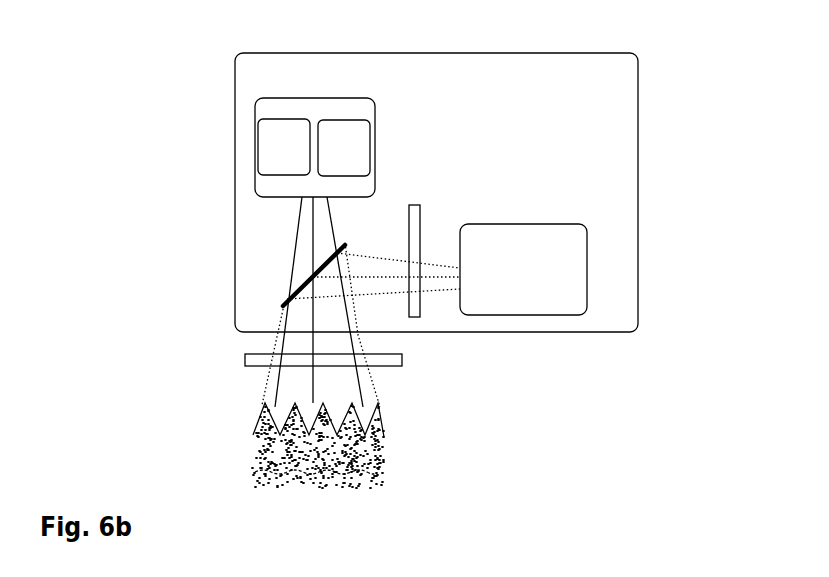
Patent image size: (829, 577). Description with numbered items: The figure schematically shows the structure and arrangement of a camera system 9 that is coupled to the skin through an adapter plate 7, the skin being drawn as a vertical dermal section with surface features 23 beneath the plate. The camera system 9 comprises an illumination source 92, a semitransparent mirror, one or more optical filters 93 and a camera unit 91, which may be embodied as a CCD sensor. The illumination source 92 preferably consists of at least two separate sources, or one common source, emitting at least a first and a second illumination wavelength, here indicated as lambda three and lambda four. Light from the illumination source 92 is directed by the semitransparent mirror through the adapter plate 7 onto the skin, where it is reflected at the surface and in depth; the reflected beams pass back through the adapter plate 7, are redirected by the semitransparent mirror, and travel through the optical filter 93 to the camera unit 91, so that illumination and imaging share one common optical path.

The camera system 9 is at (642, 116).
The illumination source 92 is at (308, 111).
The camera unit 91 is at (565, 300).
The optical filter 93 is at (417, 275).
The adapter plate 7 is at (248, 360).
The sample features / particles 23 is at (295, 403).